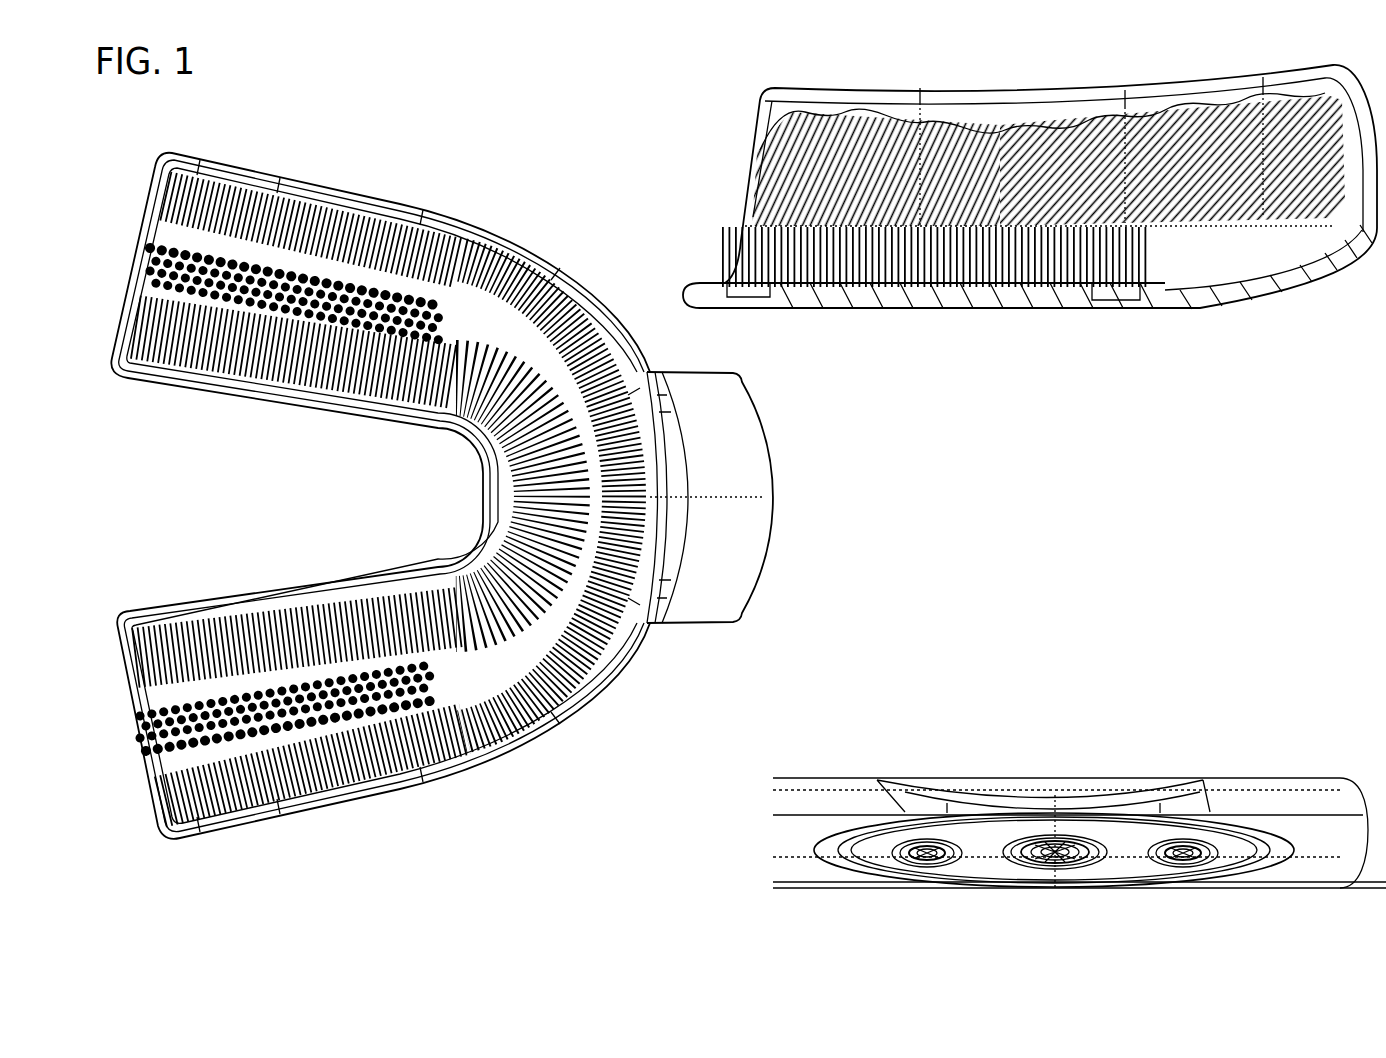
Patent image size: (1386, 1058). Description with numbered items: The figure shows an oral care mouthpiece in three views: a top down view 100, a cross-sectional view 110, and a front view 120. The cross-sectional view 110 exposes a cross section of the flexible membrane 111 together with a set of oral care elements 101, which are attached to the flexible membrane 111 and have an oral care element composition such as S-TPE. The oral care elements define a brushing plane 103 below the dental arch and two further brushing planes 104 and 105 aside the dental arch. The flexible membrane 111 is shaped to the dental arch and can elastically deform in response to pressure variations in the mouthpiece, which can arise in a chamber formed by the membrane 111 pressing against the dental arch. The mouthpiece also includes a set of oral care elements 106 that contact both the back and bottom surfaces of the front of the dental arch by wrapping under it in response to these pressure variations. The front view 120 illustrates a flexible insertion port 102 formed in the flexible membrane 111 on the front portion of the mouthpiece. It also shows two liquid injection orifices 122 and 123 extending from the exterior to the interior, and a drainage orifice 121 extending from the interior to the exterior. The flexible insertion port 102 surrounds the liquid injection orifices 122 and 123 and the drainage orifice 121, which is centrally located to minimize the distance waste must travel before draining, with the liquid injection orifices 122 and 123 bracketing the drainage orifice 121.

The top down view 100 is at (406, 865).
The set of oral care elements 101 is at (757, 177).
The flexible insertion port 102 is at (907, 812).
The brushing plane 103 is at (440, 300).
The brushing plane 104 is at (352, 200).
The brushing plane 105 is at (240, 397).
The set of oral care elements 106 is at (525, 488).
The cross-sectional view 110 is at (1071, 361).
The flexible membrane 111 is at (1305, 278).
The front view 120 is at (1077, 763).
The drainage orifice 121 is at (1055, 867).
The liquid injection orifice 122 is at (922, 862).
The liquid injection orifice 123 is at (1197, 860).